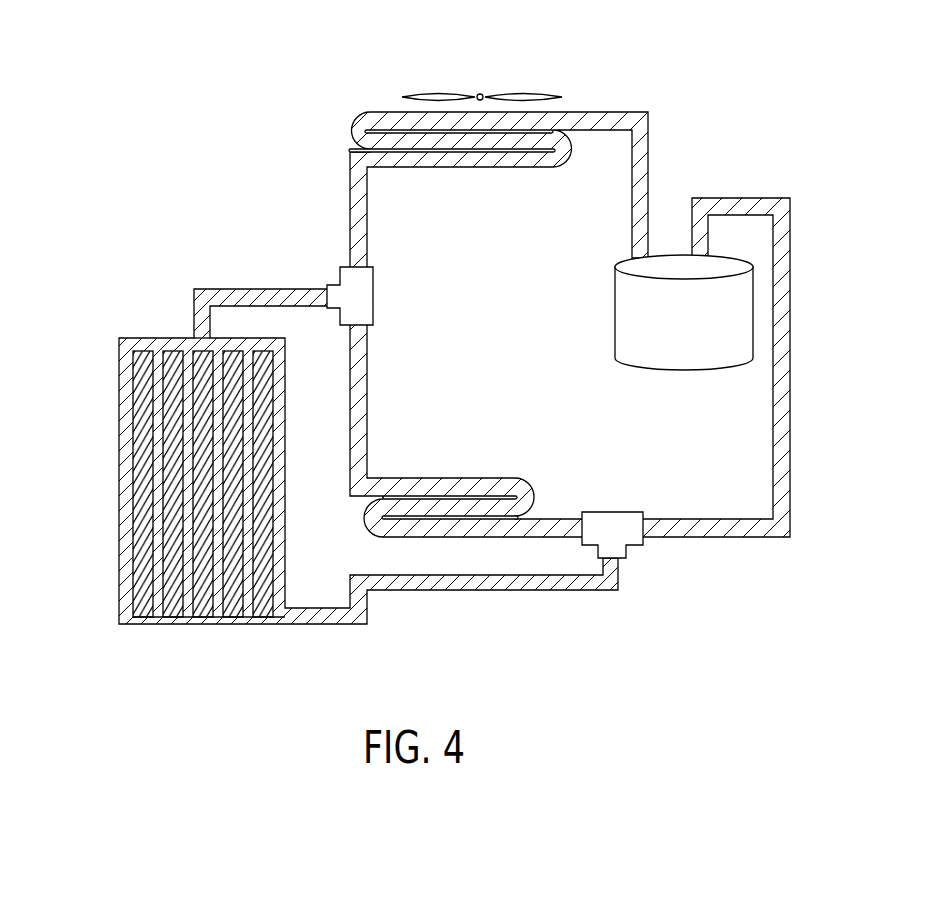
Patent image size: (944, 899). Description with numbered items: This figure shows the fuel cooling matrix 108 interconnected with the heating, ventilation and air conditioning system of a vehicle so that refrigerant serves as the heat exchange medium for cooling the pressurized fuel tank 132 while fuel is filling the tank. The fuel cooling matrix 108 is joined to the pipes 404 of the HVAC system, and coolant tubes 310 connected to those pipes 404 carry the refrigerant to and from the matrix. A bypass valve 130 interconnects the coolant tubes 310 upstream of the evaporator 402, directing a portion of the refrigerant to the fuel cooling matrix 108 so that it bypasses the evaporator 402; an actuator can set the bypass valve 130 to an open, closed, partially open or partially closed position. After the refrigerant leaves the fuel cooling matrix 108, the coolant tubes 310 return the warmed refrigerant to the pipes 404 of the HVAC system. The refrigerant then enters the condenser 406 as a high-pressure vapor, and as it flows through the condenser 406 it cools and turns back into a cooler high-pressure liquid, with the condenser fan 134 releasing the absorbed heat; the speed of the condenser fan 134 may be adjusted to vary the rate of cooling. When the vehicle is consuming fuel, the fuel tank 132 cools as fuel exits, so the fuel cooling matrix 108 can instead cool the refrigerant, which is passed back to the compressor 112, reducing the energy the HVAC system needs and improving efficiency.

The fuel cooling matrix 108 is at (310, 456).
The compressor 112 is at (615, 333).
The bypass valve 130 is at (373, 282).
The fuel tank 132 is at (142, 615).
The condenser fan 134 is at (542, 92).
The coolant tubes 310 is at (157, 482).
The evaporator 402 is at (528, 483).
The pipes 404 is at (350, 208).
The condenser 406 is at (352, 127).